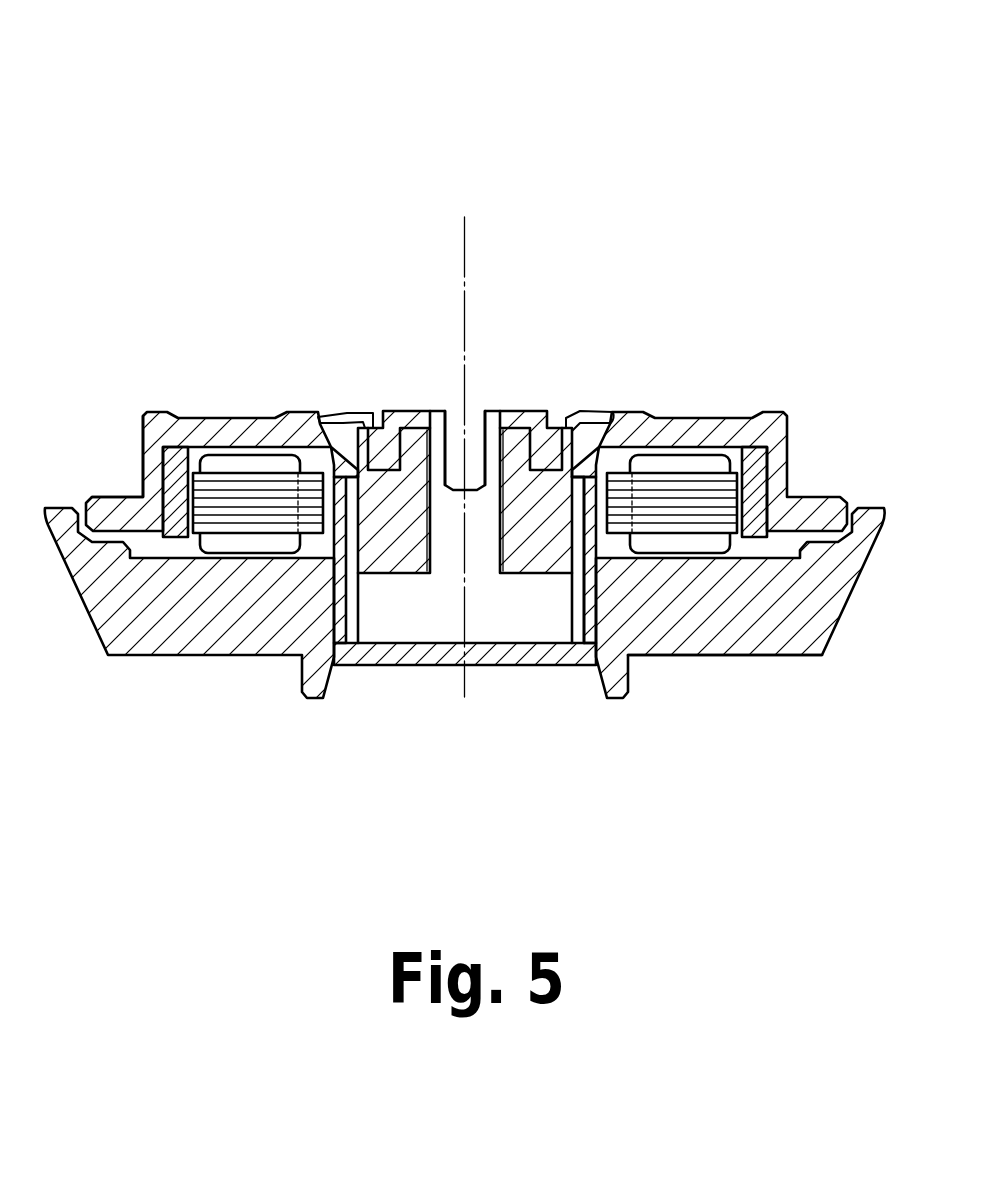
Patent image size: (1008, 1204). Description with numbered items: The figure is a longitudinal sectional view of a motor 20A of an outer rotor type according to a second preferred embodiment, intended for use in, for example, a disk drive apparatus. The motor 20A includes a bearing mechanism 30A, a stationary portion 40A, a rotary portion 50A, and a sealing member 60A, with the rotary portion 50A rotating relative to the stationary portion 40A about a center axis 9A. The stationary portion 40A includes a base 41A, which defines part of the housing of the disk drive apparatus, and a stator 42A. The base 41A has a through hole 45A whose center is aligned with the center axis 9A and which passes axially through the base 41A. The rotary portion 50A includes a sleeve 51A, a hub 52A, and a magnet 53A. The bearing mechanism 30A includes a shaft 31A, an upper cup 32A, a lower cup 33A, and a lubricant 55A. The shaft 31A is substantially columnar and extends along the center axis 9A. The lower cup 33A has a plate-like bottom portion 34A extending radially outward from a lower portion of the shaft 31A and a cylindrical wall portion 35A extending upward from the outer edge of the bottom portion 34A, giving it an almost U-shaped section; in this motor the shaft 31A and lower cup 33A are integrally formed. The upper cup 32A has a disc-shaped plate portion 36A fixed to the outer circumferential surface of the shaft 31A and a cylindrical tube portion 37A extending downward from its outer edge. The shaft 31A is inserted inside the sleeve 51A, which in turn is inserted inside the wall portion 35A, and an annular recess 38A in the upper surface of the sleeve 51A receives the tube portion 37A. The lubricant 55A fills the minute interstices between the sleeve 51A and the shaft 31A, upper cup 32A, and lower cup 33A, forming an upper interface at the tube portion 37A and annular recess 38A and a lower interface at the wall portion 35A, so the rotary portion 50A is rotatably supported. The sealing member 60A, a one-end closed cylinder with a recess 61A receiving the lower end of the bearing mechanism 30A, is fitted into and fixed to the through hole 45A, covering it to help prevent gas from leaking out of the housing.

The motor 20A is at (465, 467).
The center axis 9A is at (463, 247).
The bearing mechanism 30A is at (465, 703).
The shaft 31A is at (472, 540).
The upper cup 32A is at (573, 430).
The lower cup 33A is at (465, 653).
The bottom portion 34A is at (403, 620).
The wall portion 35A is at (349, 555).
The plate portion 36A is at (555, 456).
The tube portion 37A is at (581, 414).
The annular recess 38A is at (381, 456).
The stationary portion 40A is at (714, 444).
The base 41A is at (735, 603).
The stator 42A is at (693, 445).
The through hole 45A is at (438, 497).
The rotary portion 50A is at (212, 393).
The sleeve 51A is at (298, 412).
The hub 52A is at (247, 475).
The magnet 53A is at (147, 415).
The lubricant 55A is at (725, 689).
The sealing member 60A is at (568, 577).
The recess 61A is at (440, 622).